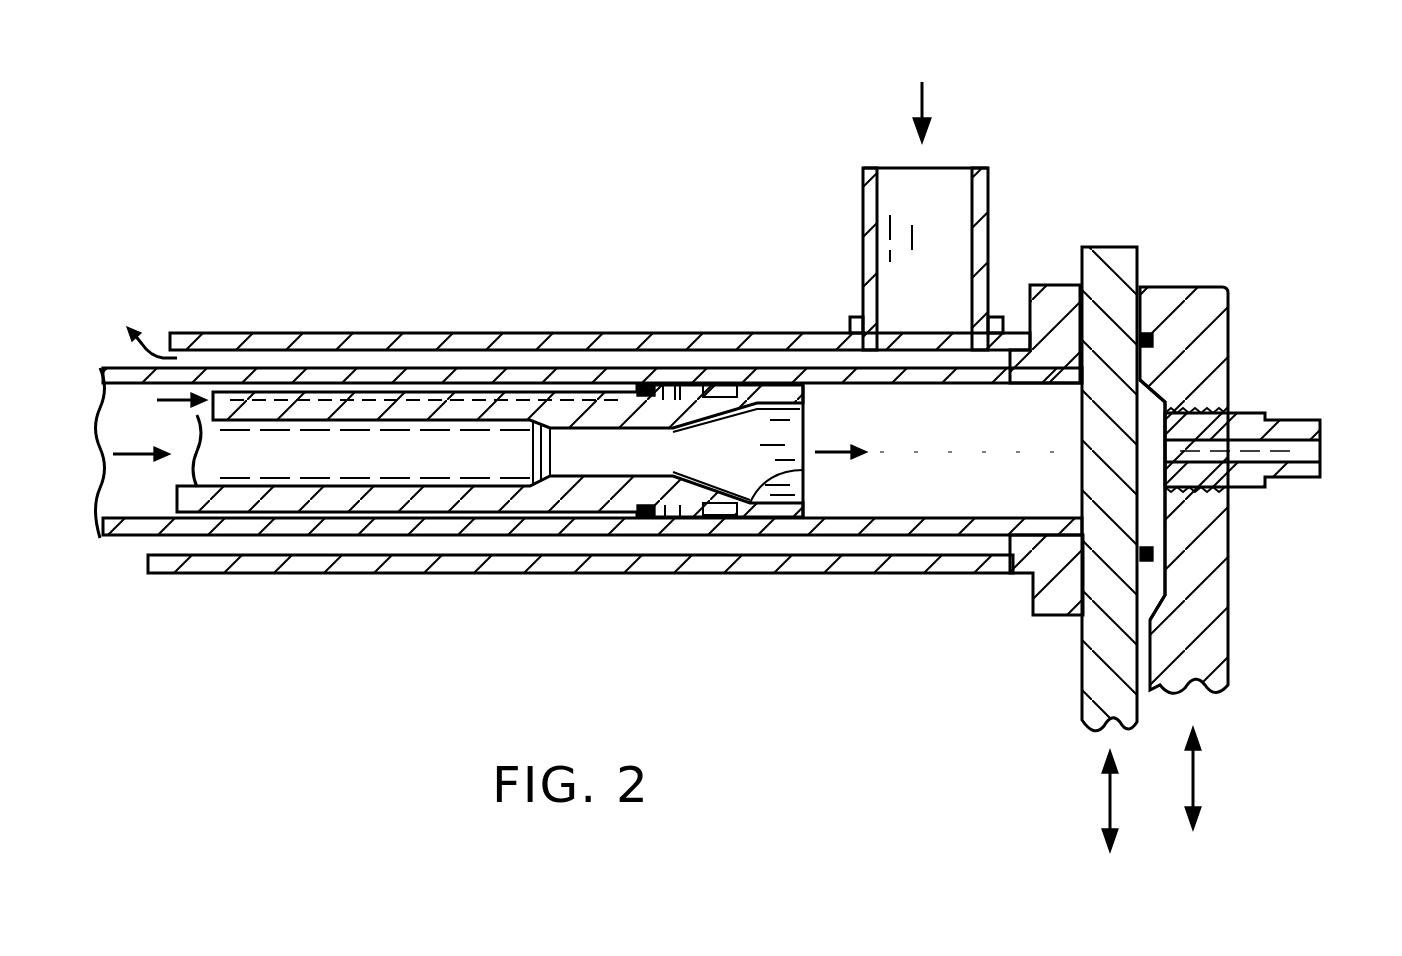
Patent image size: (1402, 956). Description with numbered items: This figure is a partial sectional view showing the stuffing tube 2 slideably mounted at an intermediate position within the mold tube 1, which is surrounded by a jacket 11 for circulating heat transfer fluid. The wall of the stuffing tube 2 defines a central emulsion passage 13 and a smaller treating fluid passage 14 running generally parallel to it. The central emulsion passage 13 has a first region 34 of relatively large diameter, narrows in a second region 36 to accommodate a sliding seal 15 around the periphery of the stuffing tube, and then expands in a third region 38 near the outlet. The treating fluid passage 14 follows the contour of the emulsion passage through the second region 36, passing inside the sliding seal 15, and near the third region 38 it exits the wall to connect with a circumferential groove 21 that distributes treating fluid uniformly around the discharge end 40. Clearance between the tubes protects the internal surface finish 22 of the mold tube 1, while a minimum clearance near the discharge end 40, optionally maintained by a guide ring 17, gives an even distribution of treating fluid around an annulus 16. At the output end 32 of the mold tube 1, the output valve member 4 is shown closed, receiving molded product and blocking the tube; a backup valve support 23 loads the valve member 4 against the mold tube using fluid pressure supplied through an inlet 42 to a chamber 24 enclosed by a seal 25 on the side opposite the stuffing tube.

The mold tube 1 is at (437, 545).
The stuffing tube 2 is at (300, 498).
The output valve member 4 is at (1108, 268).
The jacket 11 is at (487, 340).
The central emulsion passage 13 is at (391, 470).
The treating fluid passage 14 is at (345, 392).
The sliding seal 15 is at (644, 383).
The annulus 16 is at (760, 392).
The guide ring 17 is at (720, 390).
The circumferential groove 21 is at (675, 507).
The internal surface finish 22 is at (925, 528).
The backup valve support 23 is at (1190, 298).
The chamber 24 is at (1145, 423).
The seal 25 is at (1155, 340).
The output end 32 is at (1075, 280).
The first region 34 is at (192, 478).
The second region 36 is at (563, 460).
The third region 38 is at (803, 472).
The discharge end 40 is at (800, 430).
The inlet 42 is at (1315, 452).